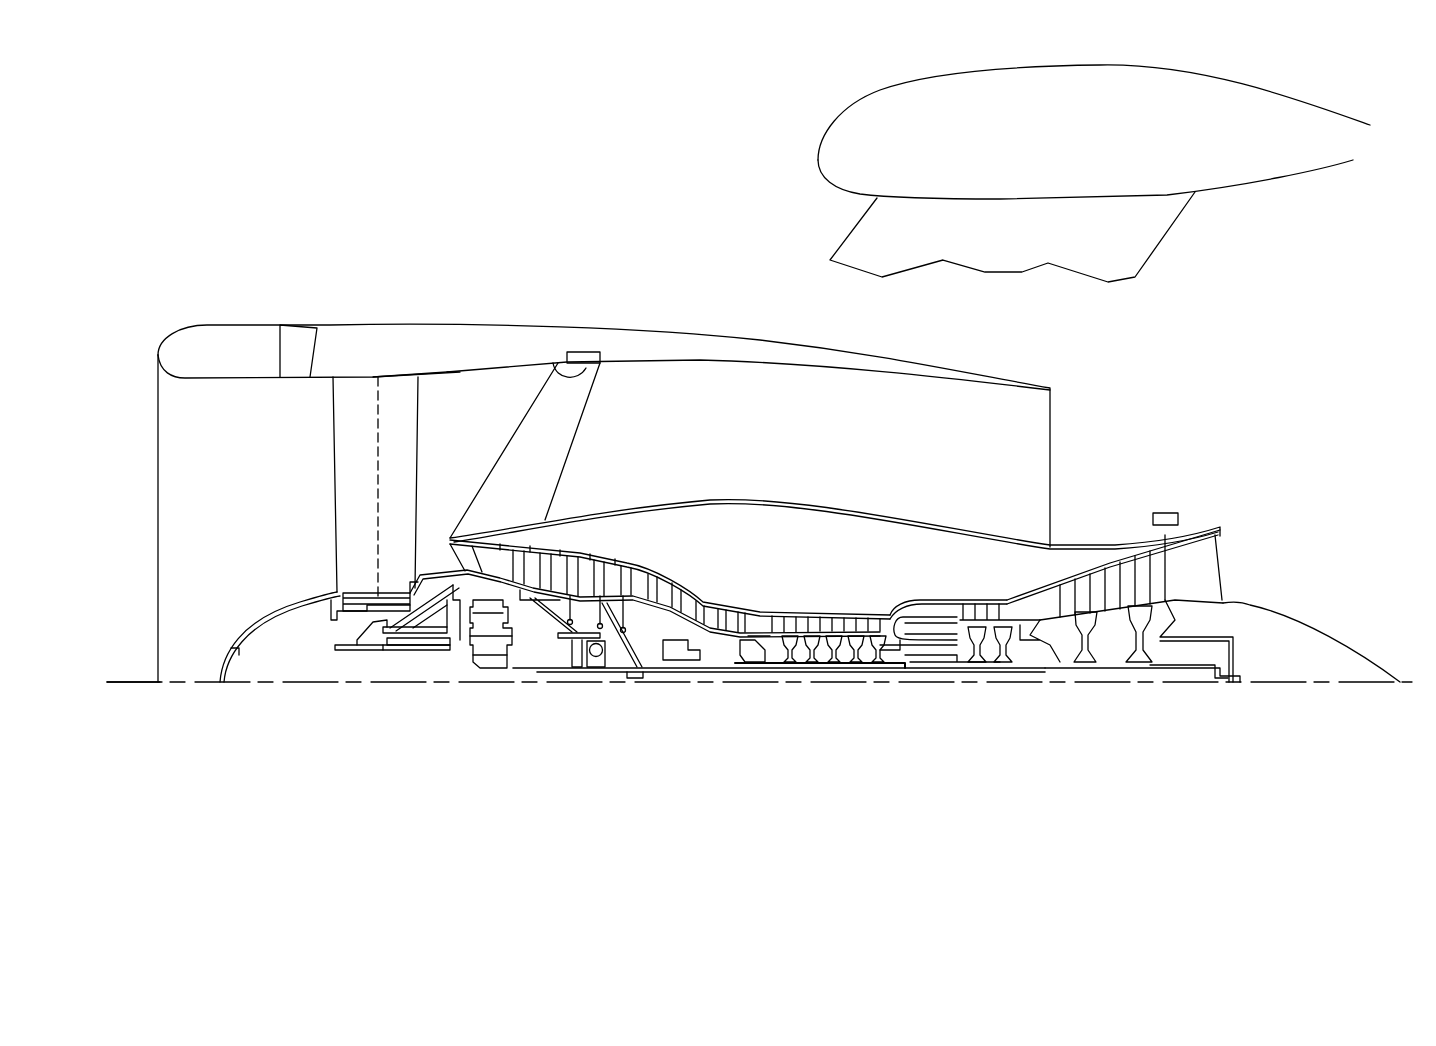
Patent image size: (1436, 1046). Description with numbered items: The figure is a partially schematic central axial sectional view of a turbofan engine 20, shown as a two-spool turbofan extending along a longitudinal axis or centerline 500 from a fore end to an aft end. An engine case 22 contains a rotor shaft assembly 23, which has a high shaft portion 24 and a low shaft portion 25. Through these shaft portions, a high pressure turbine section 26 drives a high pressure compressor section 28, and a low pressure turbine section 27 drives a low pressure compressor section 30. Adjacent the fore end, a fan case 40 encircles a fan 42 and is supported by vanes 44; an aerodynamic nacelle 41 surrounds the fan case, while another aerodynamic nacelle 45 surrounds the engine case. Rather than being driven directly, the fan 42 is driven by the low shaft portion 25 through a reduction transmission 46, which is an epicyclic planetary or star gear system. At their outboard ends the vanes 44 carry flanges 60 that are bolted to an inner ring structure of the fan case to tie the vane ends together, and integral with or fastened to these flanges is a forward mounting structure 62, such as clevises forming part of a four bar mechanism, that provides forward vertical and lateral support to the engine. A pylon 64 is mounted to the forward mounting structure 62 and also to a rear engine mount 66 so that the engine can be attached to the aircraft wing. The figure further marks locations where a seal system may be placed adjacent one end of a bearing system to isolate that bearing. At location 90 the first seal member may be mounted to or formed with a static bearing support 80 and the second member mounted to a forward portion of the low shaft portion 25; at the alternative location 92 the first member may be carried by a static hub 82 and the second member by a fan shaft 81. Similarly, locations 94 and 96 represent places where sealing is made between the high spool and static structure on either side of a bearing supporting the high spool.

The turbofan engine 20 is at (503, 225).
The engine case 22 is at (841, 588).
The rotor shaft assembly 23 is at (740, 676).
The high shaft portion 24 is at (921, 661).
The low shaft portion 25 is at (887, 676).
The high pressure turbine section 26 is at (1001, 601).
The low pressure turbine section 27 is at (1115, 544).
The high pressure compressor section 28 is at (793, 612).
The low pressure compressor section 30 is at (618, 565).
The fan case 40 is at (403, 357).
The nacelle 41 is at (487, 317).
The fan 42 is at (318, 529).
The vanes 44 is at (562, 416).
The nacelle 45 is at (931, 513).
The reduction transmission 46 is at (488, 659).
The flanges 60 is at (587, 366).
The forward mounting structure 62 is at (584, 348).
The pylon 64 is at (1158, 268).
The rear engine mount 66 is at (1165, 513).
The static bearing support 80 is at (598, 659).
The fan shaft 81 is at (367, 650).
The static hub 82 is at (427, 603).
The seal system location 90 is at (617, 659).
The seal system location 92 is at (381, 648).
The seal location 94 is at (661, 635).
The seal location 96 is at (713, 613).
The longitudinal axis 500 is at (140, 684).